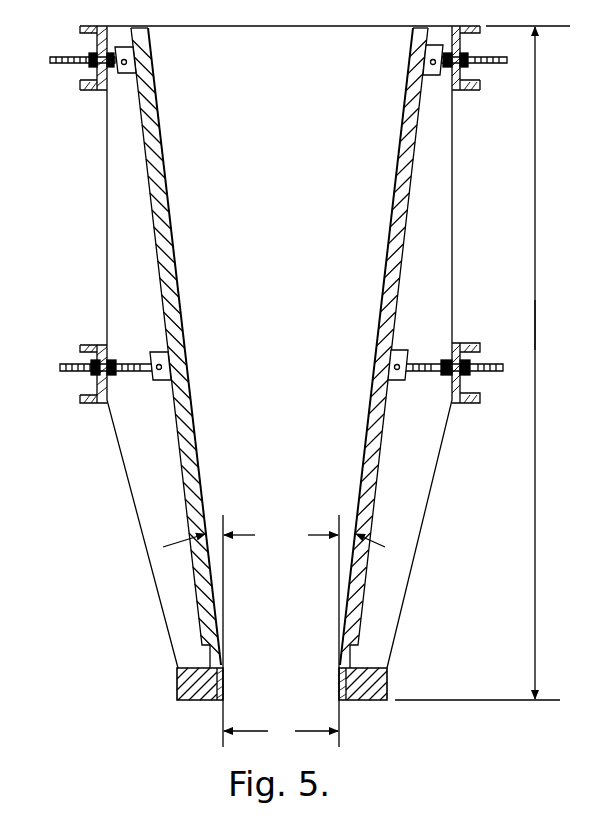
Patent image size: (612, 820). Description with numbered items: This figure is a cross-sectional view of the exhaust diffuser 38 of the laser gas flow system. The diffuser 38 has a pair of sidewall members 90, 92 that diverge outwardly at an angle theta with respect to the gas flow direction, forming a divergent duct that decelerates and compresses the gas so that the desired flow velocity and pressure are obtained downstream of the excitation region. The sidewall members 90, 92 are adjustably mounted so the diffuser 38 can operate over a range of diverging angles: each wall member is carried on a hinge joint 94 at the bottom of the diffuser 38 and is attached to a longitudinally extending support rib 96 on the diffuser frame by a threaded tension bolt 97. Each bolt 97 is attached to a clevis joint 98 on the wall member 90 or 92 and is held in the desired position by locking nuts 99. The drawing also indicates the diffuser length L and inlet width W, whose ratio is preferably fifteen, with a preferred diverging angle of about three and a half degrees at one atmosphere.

The exhaust diffuser 38 is at (100, 203).
The sidewall member 90 is at (158, 148).
The sidewall member 92 is at (401, 118).
The hinge joint 94 is at (222, 686).
The support rib 96 is at (90, 89).
The threaded tension bolt 97 is at (48, 66).
The clevis joint 98 is at (127, 76).
The locking nut 99 is at (112, 53).